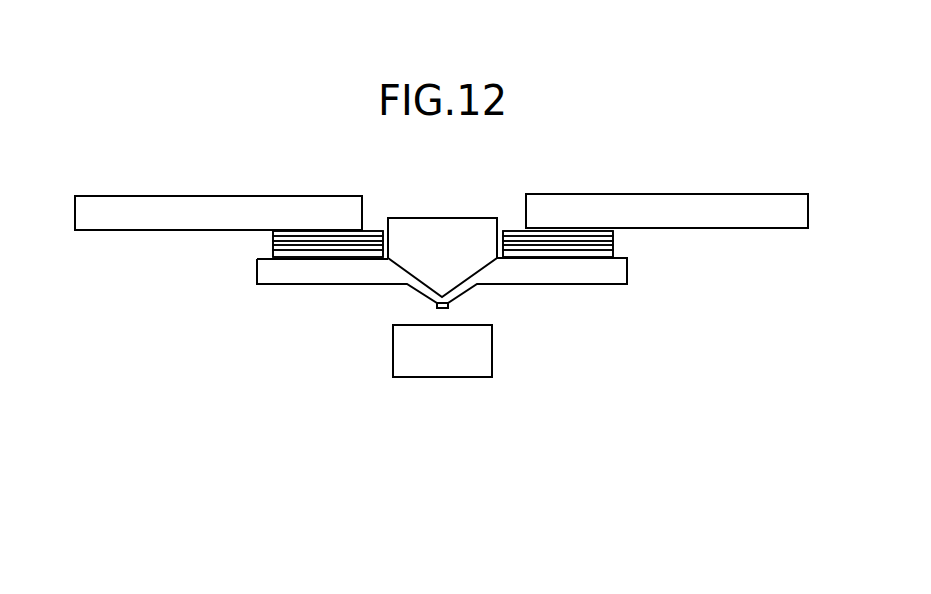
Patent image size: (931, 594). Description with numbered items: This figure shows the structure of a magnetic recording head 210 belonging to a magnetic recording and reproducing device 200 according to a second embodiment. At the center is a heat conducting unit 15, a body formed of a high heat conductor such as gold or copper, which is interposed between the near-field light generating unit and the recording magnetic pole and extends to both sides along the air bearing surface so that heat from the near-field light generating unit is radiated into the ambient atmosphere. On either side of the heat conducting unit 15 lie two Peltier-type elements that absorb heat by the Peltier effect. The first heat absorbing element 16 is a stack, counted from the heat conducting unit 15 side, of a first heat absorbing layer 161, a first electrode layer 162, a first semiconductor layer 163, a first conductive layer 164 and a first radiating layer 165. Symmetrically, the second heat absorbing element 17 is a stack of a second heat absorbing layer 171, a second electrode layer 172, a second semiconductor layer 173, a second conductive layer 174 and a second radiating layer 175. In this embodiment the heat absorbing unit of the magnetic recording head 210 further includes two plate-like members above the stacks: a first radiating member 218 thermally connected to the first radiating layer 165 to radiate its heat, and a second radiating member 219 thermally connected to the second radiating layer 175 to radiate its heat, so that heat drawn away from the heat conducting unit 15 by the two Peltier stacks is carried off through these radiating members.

The magnetic recording and reproducing device 200 is at (239, 457).
The magnetic recording head 210 is at (253, 376).
The heat conducting unit 15 is at (293, 273).
The first heat absorbing element 16 is at (723, 233).
The first heat absorbing layer 161 is at (613, 253).
The first electrode layer 162 is at (613, 248).
The first semiconductor layer 163 is at (613, 243).
The first conductive layer 164 is at (613, 238).
The first radiating layer 165 is at (613, 233).
The second heat absorbing element 17 is at (162, 233).
The second heat absorbing layer 171 is at (273, 253).
The second electrode layer 172 is at (273, 248).
The second semiconductor layer 173 is at (273, 243).
The second conductive layer 174 is at (273, 238).
The second radiating layer 175 is at (273, 233).
The first radiating member 218 is at (742, 205).
The second radiating member 219 is at (143, 207).